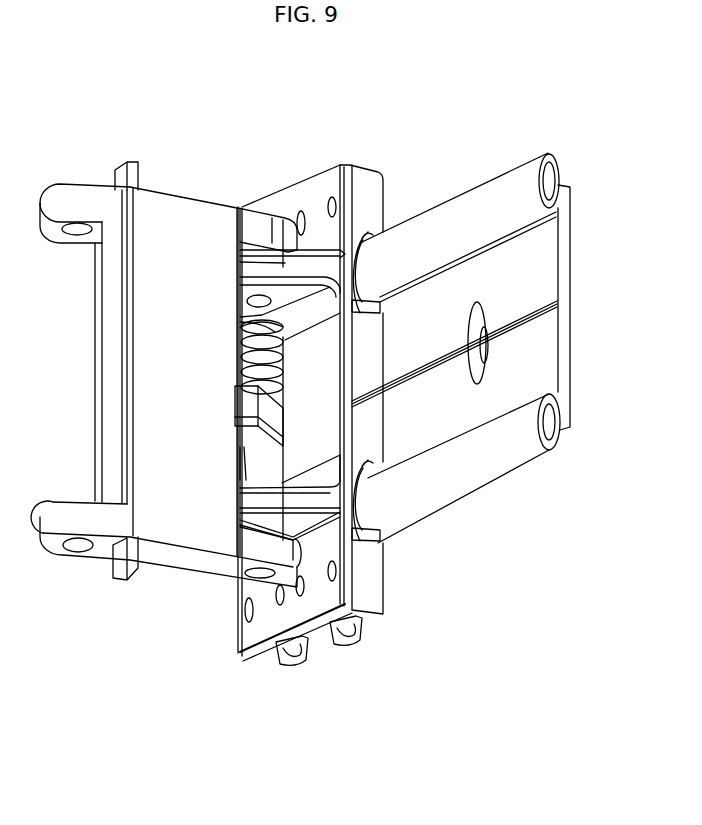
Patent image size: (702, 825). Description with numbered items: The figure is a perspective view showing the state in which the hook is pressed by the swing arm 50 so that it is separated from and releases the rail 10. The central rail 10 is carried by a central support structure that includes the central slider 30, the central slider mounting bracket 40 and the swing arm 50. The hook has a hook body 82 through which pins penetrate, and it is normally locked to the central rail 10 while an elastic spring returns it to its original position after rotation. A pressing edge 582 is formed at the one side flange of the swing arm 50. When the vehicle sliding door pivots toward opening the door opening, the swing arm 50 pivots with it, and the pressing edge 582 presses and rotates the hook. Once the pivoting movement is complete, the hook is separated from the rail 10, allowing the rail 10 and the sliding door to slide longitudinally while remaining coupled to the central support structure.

The central rail 10 is at (478, 495).
The central slider 30 is at (373, 593).
The central slider mounting bracket 40 is at (315, 603).
The swing arm 50 is at (173, 510).
The hook body 82 is at (246, 440).
The pressing edge 582 is at (237, 207).